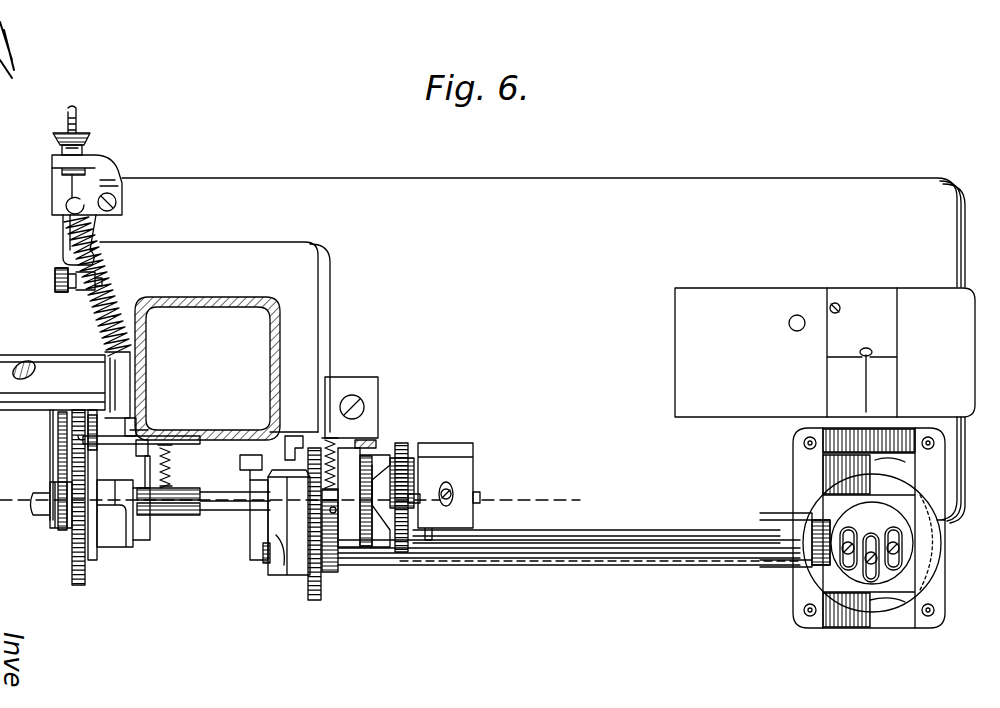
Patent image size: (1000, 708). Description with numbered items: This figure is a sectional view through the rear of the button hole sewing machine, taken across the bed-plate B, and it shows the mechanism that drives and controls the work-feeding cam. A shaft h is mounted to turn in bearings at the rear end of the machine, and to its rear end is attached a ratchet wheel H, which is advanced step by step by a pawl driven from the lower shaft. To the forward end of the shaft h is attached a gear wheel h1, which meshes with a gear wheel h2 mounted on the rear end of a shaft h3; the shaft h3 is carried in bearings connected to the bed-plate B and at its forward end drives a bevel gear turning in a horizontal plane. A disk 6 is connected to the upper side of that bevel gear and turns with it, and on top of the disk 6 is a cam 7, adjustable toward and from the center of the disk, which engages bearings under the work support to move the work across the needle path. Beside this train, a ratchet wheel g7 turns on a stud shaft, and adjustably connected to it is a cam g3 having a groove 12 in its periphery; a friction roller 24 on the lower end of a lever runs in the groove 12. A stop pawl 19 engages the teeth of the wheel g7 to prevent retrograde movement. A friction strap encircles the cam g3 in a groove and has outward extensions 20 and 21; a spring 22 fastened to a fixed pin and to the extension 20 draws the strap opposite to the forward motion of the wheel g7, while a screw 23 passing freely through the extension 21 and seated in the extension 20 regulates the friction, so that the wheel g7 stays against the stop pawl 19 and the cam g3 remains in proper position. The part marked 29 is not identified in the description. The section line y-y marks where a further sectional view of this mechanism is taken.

The bed-plate B is at (543, 350).
The ratchet wheel H is at (72, 563).
The shaft h is at (216, 510).
The gear wheel h1 is at (308, 458).
The gear wheel h2 is at (310, 595).
The shaft h3 is at (553, 552).
The section line y- y is at (540, 500).
The disk 6 is at (877, 510).
The cam 7 is at (871, 547).
The groove 12 is at (377, 468).
The stop pawl 19 is at (437, 487).
The extension 20 is at (321, 490).
The extension 21 is at (320, 508).
The spring 22 is at (330, 441).
The screw 23 is at (337, 514).
The friction roller 24 is at (368, 450).
The collar 29 is at (399, 548).
The cam g3 is at (364, 497).
The ratchet wheel g7 is at (423, 443).